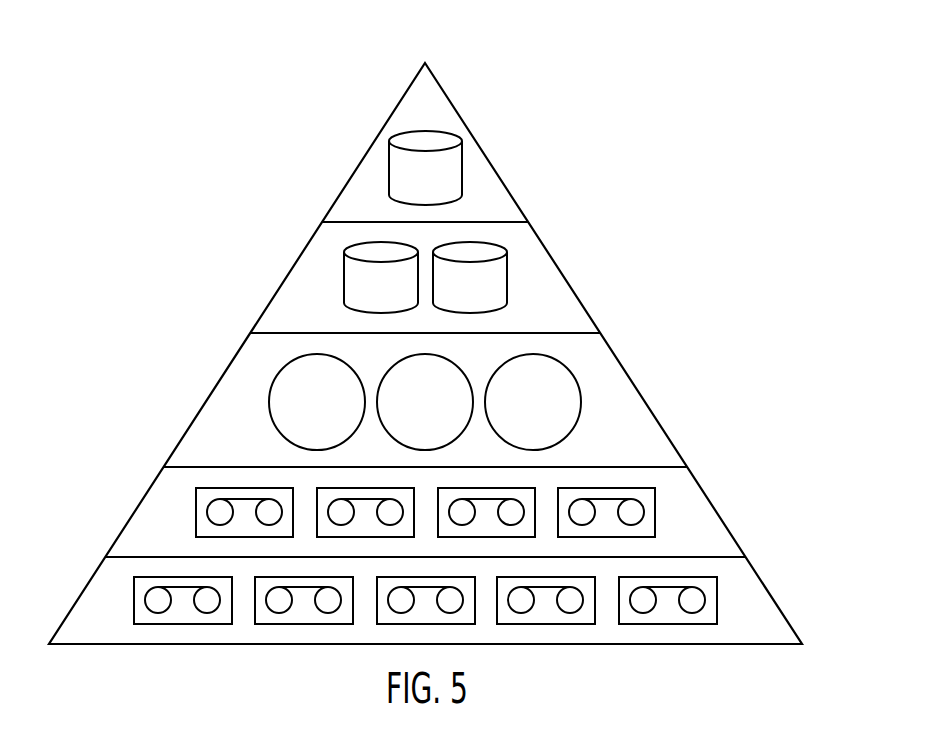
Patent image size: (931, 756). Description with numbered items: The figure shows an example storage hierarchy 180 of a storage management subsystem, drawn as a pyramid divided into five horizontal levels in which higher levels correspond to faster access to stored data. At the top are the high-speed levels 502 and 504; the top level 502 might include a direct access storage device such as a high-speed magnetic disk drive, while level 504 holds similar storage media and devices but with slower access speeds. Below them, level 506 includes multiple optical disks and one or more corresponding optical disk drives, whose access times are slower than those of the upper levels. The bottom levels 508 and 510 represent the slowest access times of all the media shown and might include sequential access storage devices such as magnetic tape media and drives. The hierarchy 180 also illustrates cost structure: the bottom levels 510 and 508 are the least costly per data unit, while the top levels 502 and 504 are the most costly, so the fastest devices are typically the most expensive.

The storage hierarchy 180 is at (367, 72).
The top level 502 is at (482, 150).
The level 504 is at (567, 277).
The level 506 is at (646, 398).
The level 508 is at (718, 510).
The bottom level 510 is at (773, 598).